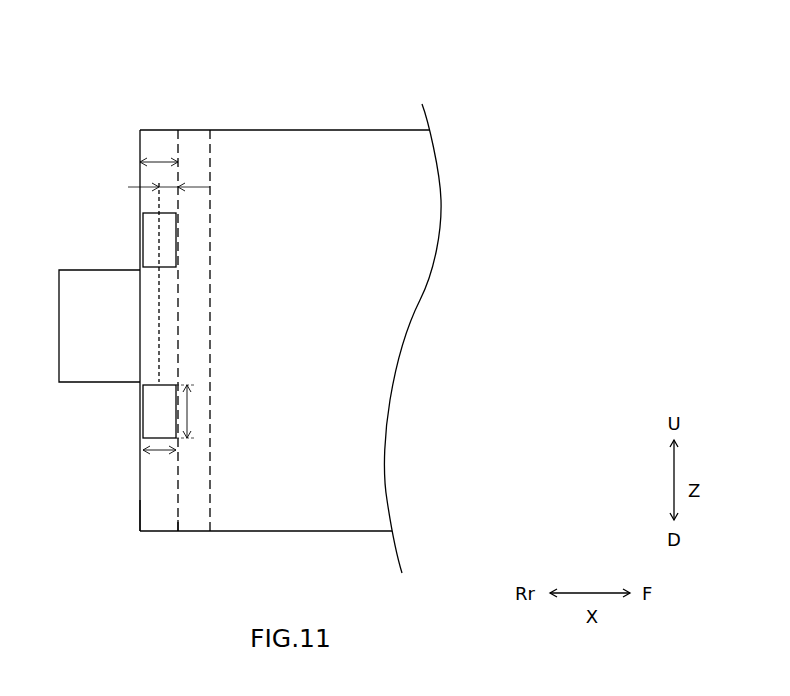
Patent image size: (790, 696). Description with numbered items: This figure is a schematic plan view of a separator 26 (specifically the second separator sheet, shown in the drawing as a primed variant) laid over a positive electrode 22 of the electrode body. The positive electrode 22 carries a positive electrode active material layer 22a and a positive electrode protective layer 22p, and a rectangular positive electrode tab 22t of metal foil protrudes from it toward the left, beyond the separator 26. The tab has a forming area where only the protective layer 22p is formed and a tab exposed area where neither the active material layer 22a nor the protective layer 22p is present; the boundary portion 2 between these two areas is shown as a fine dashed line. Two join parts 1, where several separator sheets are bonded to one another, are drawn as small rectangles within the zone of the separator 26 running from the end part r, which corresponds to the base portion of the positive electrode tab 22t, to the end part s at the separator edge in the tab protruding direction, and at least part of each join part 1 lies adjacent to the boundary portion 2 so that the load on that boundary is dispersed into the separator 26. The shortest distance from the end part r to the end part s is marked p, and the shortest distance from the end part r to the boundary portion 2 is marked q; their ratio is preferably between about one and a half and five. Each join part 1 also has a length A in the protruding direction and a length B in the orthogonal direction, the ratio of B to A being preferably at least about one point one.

The positive electrode 22 is at (277, 65).
The positive electrode active material layer 22a is at (340, 138).
The positive electrode protective layer 22p is at (196, 138).
The positive electrode tab 22t is at (90, 380).
The separator 26 is at (285, 526).
The join part 1 is at (143, 246).
The boundary portion 2 is at (158, 322).
The shortest distance p is at (160, 160).
The shortest distance q is at (168, 186).
The length A is at (152, 456).
The length B is at (190, 411).
The end part s is at (139, 528).
The end part r is at (178, 528).